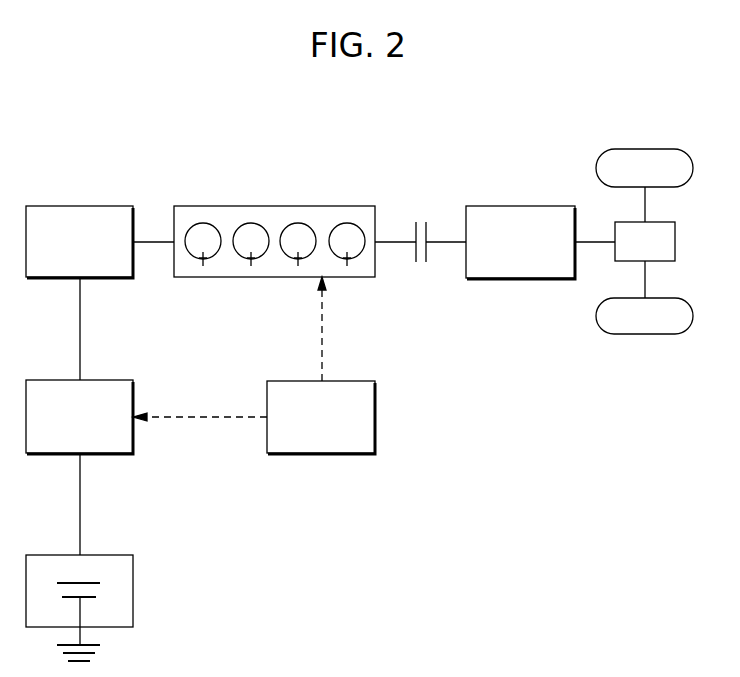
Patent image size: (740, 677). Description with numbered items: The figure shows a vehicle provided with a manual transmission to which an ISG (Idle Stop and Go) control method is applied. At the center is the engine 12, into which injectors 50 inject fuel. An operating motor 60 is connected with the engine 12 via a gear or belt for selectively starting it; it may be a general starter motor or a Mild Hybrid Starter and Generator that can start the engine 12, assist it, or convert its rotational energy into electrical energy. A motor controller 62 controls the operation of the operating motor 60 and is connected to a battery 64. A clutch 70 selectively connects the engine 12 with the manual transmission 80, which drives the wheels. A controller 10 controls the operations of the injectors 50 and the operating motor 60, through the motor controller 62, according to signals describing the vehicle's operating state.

The controller 10 is at (320, 453).
The engine 12 is at (273, 206).
The injector 50 is at (298, 266).
The operating motor 60 is at (78, 206).
The motor controller 62 is at (113, 453).
The battery 64 is at (133, 590).
The clutch 70 is at (421, 218).
The manual transmission 80 is at (519, 206).